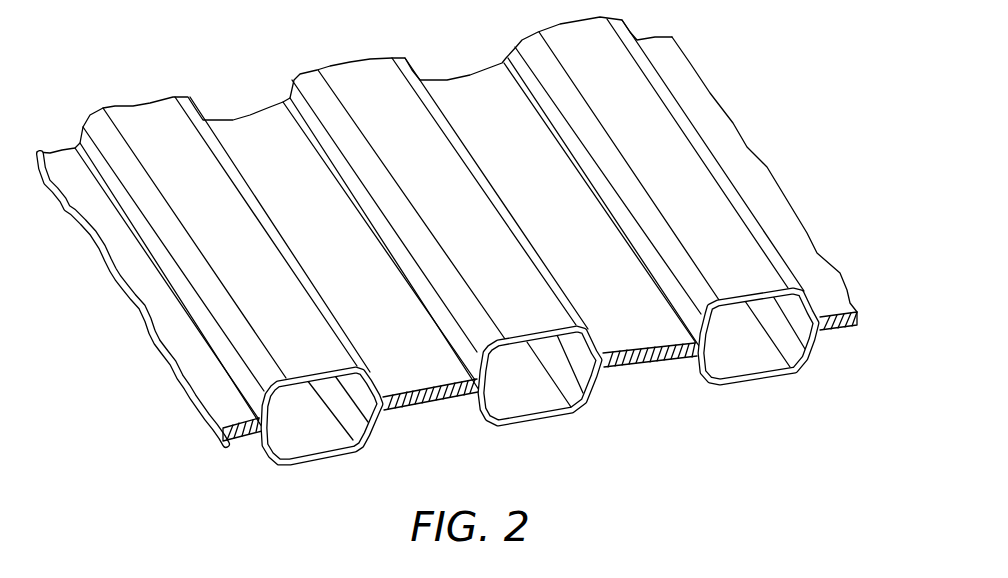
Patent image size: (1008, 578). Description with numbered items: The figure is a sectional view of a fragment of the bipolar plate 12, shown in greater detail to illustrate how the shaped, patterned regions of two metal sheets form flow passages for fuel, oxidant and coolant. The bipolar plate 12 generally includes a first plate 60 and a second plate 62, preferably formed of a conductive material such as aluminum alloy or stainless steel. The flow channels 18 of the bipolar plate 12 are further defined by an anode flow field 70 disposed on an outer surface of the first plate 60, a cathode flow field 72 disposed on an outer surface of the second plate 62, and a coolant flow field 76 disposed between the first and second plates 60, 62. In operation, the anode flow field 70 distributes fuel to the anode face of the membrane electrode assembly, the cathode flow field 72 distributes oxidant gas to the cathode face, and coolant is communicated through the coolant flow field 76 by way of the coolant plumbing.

The bipolar plate 12 is at (472, 260).
The flow channels 18 is at (668, 142).
The first plate 60 is at (817, 277).
The second plate 62 is at (242, 444).
The anode flow field 70 is at (380, 340).
The cathode flow field 72 is at (597, 393).
The coolant flow field 76 is at (797, 367).